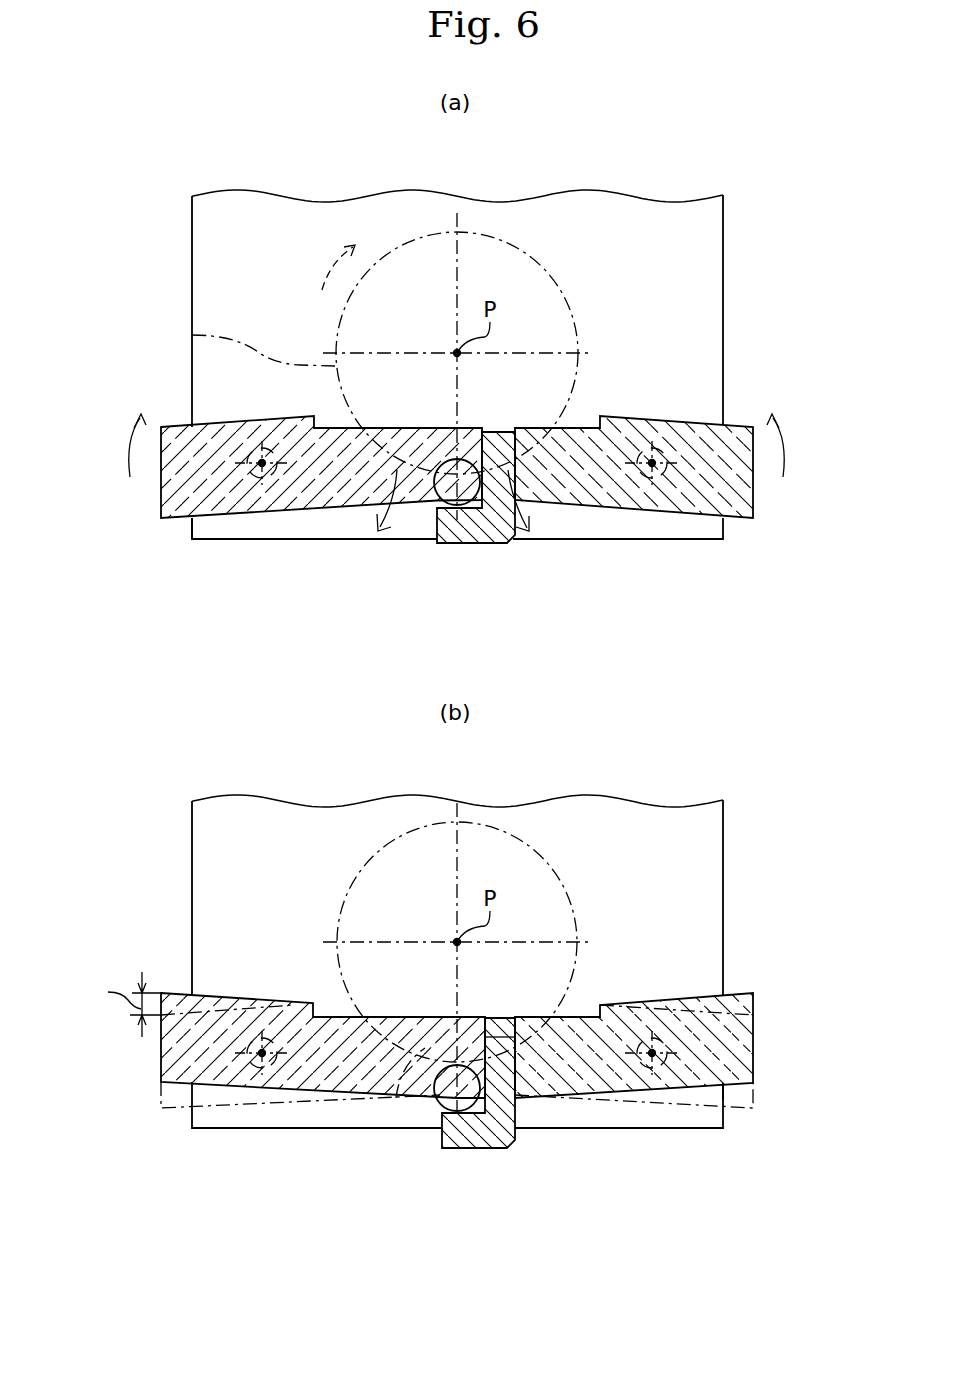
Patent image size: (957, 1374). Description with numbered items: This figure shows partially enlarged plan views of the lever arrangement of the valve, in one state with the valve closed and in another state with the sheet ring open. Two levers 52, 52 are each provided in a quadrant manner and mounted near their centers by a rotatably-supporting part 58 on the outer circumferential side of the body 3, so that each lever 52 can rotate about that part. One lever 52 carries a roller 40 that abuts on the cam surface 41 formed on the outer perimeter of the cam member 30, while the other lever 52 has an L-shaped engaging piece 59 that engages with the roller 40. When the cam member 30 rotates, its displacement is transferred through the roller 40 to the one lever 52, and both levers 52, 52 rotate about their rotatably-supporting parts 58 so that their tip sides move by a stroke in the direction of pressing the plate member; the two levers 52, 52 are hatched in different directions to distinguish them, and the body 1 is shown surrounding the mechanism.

The housing 1 is at (713, 302).
The body 3 is at (213, 284).
The cam member 30 is at (508, 250).
The roller 40 is at (452, 510).
The cam surface 41 is at (192, 335).
The lever 52 is at (172, 490).
The rotatably-supporting part 58 is at (262, 478).
The L-shaped engaging piece 59 is at (489, 524).